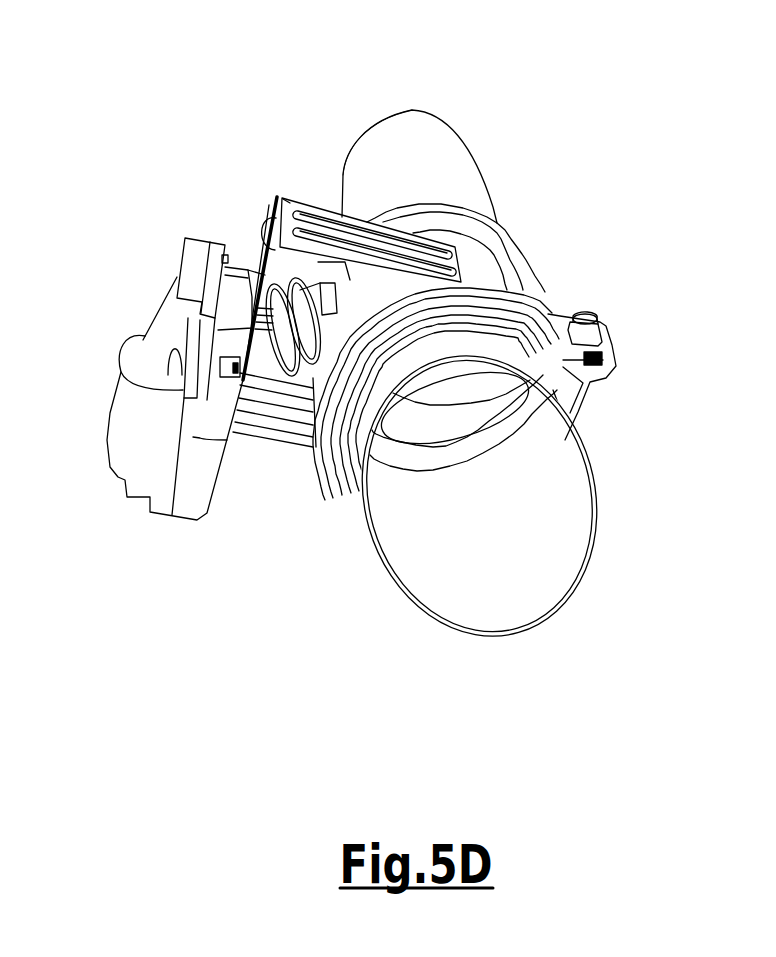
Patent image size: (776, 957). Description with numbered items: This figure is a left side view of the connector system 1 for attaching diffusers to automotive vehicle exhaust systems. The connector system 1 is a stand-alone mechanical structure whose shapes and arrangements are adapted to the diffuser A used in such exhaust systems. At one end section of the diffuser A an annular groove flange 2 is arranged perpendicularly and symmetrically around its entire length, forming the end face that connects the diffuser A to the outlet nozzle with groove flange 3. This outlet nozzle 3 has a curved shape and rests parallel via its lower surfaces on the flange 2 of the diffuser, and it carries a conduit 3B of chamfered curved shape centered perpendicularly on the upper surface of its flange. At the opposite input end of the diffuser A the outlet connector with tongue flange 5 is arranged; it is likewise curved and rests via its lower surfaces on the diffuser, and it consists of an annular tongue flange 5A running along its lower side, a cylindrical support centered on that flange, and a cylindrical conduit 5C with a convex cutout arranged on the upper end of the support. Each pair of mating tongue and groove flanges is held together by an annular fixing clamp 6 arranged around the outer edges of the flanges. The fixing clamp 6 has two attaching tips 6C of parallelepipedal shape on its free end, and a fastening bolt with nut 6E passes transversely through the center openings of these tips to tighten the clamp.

The connector system 1 is at (322, 470).
The groove flange 2 is at (493, 252).
The outlet nozzle with groove flange 3 is at (433, 143).
The conduit 3B is at (376, 148).
The outlet connector with tongue flange 5 is at (533, 588).
The tongue flange 5A is at (558, 393).
The cylindrical conduit 5C is at (472, 588).
The fixing clamp 6 is at (540, 313).
The attaching tip 6C is at (610, 342).
The fastening bolt with nut 6E is at (592, 387).
The diffuser A is at (162, 465).